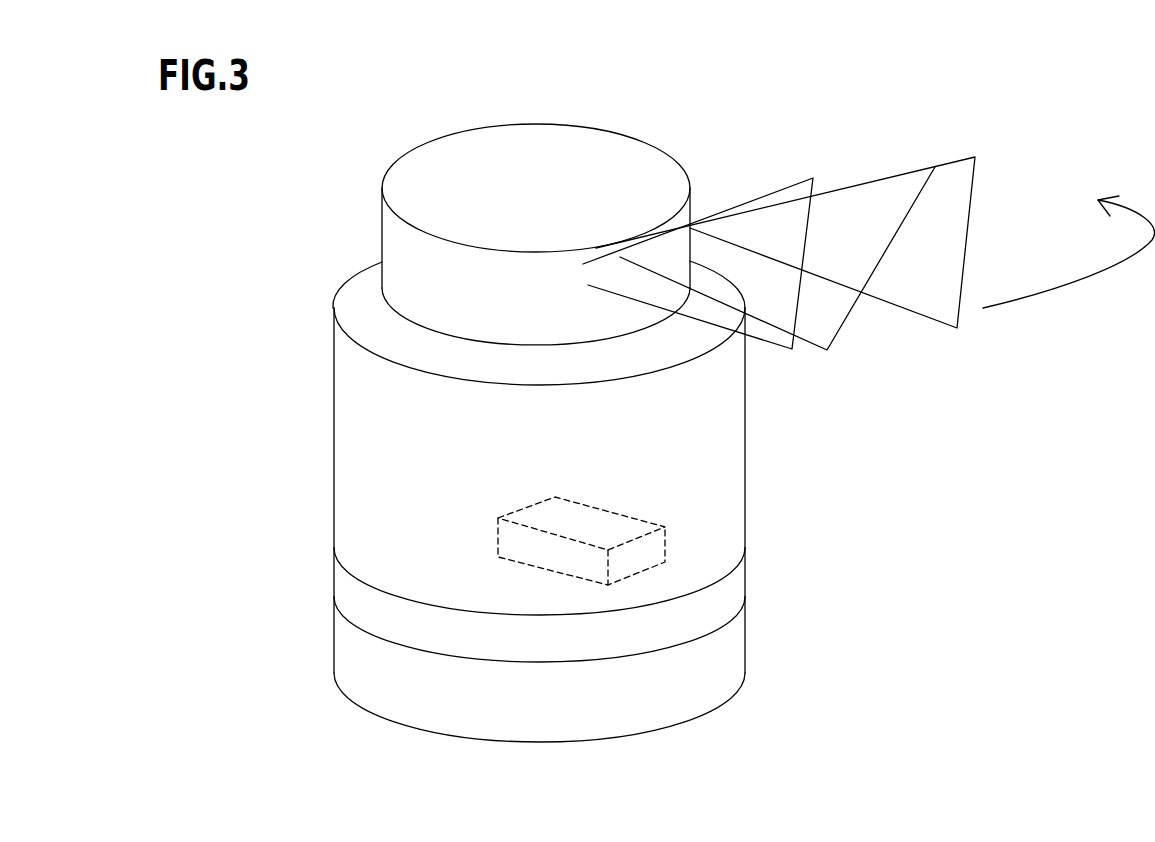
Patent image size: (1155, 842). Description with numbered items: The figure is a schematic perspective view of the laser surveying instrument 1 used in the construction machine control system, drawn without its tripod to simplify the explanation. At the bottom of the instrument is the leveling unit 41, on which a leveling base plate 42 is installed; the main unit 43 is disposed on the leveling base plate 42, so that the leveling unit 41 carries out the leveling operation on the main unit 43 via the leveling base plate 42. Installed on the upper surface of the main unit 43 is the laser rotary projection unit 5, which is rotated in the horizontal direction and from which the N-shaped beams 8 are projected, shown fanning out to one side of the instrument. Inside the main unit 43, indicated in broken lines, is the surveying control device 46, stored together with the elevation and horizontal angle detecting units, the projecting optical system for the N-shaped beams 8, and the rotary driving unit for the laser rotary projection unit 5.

The laser surveying instrument 1 is at (632, 136).
The laser rotary projection unit 5 is at (676, 160).
The N-shaped beams 8 is at (893, 167).
The main unit 43 is at (744, 466).
The surveying control device 46 is at (665, 542).
The leveling base plate 42 is at (425, 632).
The leveling unit 41 is at (747, 662).